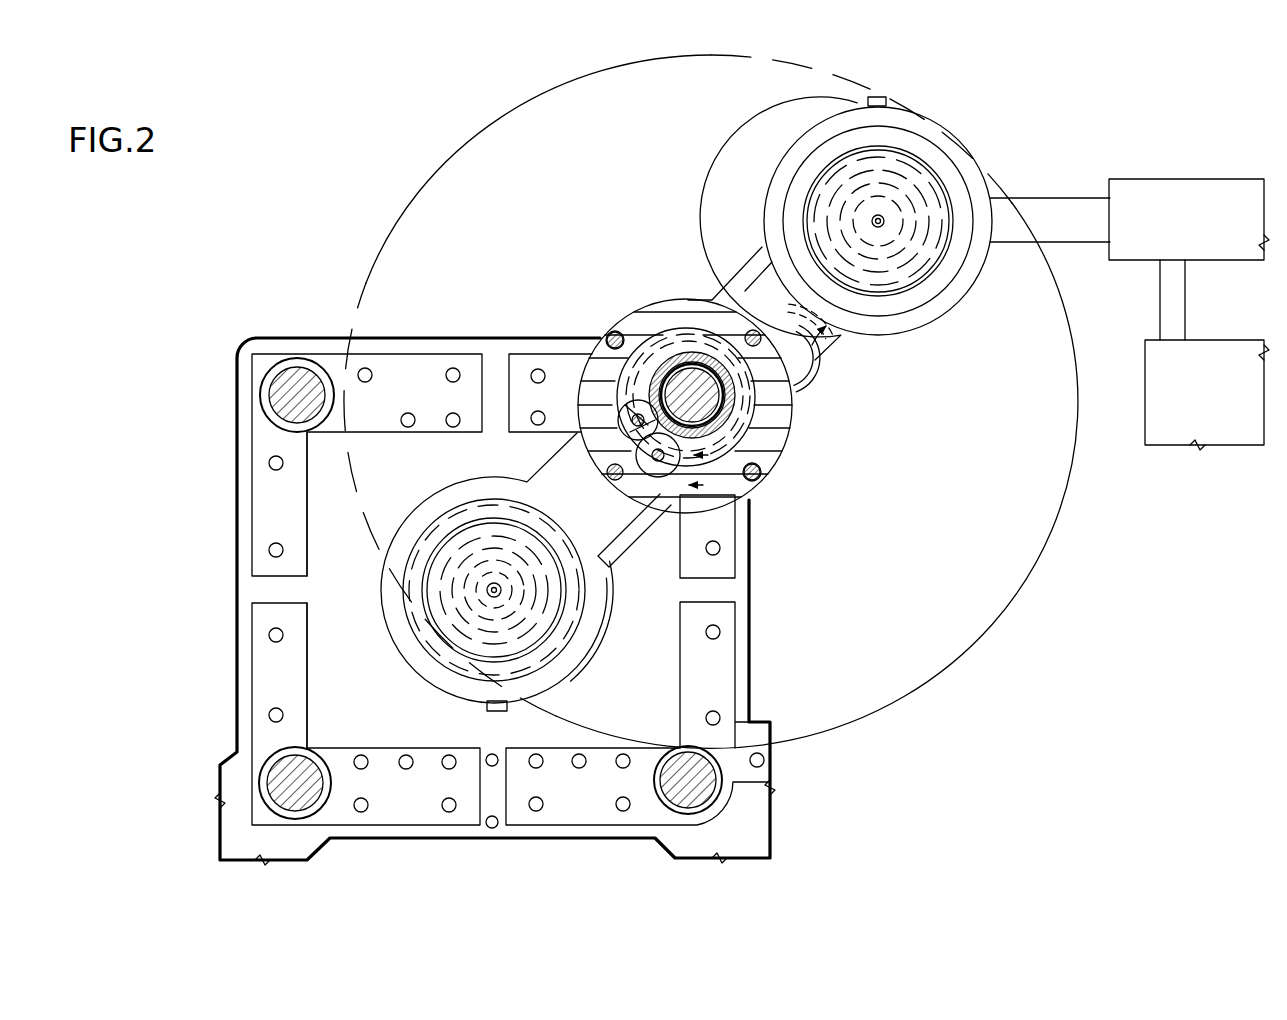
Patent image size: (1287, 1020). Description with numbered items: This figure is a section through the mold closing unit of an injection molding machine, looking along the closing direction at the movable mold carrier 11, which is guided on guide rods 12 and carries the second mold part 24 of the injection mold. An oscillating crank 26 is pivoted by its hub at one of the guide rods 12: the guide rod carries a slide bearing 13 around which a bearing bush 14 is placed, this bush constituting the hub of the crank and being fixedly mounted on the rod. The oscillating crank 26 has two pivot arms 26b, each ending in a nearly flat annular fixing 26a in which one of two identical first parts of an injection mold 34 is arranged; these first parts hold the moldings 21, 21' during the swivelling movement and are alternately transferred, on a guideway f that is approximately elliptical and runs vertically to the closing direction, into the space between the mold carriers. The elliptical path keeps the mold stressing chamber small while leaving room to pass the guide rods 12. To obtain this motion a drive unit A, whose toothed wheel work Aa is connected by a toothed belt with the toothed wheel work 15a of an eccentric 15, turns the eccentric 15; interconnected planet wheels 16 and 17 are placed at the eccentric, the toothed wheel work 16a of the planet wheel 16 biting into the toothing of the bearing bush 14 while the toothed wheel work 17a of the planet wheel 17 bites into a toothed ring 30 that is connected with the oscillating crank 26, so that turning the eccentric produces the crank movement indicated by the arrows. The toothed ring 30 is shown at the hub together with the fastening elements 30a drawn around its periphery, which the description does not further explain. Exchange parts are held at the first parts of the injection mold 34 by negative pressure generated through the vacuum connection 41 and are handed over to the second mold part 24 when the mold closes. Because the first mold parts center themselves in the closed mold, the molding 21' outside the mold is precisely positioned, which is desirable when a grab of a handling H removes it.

The movable mold carrier 11 is at (235, 486).
The guide rods 12 is at (305, 395).
The slide bearing 13 is at (722, 282).
The bearing bush 14 is at (689, 364).
The eccentric 15 is at (612, 375).
The toothed wheel work of the eccentric 15a is at (653, 355).
The planet wheel 16 is at (620, 430).
The toothed wheel work of the planet wheel 16a is at (633, 425).
The planet wheel 17 is at (652, 460).
The toothed wheel work of the planet wheel 17a is at (661, 478).
The molding 21 is at (507, 613).
The molding 21' is at (937, 221).
The second mold part 24 is at (315, 685).
The oscillating crank 26 is at (843, 338).
The annular fixings 26a is at (582, 652).
The pivot arms 26b is at (602, 577).
The toothed ring 30 is at (775, 435).
The bolt 30a is at (613, 332).
The first parts of an injection mold 34 is at (436, 526).
The vacuum connection 41 is at (763, 183).
The drive unit A is at (828, 381).
The toothed wheel work of the drive unit Aa is at (800, 391).
The handling H is at (1205, 177).
The guideway f is at (1027, 583).